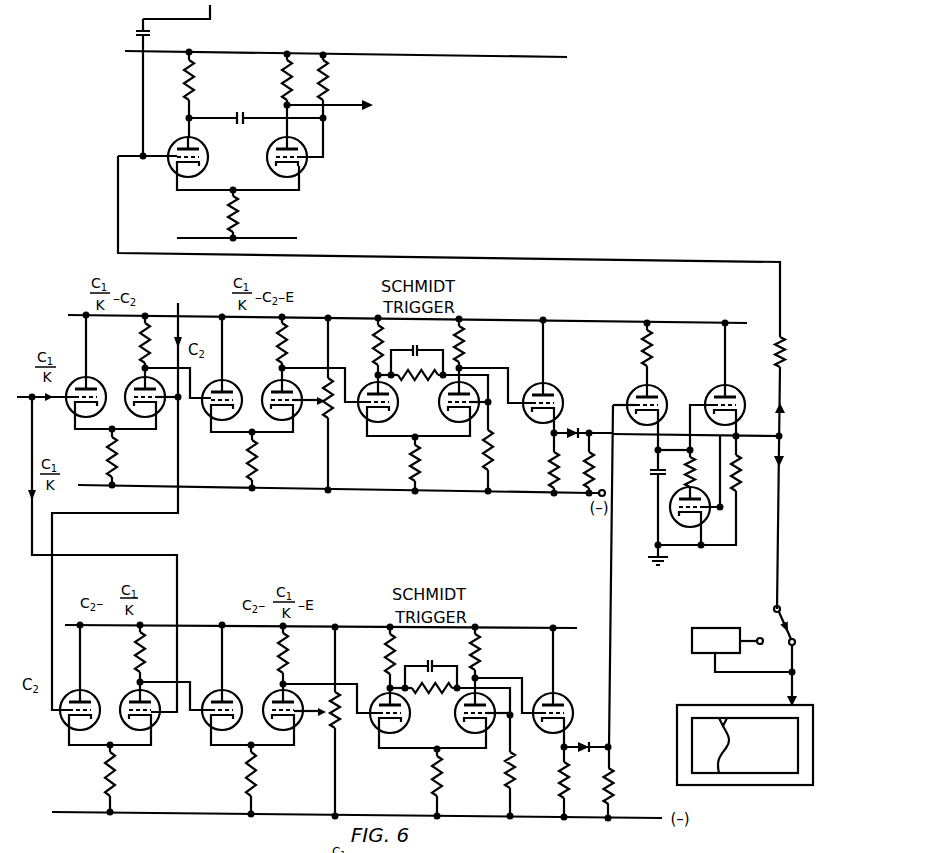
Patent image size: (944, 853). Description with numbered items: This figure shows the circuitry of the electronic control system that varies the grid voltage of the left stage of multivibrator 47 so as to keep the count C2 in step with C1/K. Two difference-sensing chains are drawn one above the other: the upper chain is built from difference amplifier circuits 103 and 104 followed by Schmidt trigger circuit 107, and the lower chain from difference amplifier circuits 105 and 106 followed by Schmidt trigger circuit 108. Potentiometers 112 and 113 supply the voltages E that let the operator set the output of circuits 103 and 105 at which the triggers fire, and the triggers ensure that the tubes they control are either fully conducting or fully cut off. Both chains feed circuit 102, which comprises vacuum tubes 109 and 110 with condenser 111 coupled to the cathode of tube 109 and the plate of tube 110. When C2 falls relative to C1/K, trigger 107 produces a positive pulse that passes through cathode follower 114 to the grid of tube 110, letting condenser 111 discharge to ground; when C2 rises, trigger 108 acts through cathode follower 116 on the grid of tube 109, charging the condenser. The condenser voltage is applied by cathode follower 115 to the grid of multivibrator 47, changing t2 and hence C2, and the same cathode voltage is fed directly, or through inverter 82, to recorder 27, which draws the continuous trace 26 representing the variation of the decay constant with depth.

The multivibrator 47 is at (227, 167).
The circuit 102 is at (684, 443).
The difference amplifier circuit 103 is at (102, 371).
The difference amplifier circuit 104 is at (268, 374).
The difference amplifier circuit 105 is at (125, 686).
The difference amplifier circuit 106 is at (267, 686).
The Schmidt trigger circuit 107 is at (405, 413).
The Schmidt trigger circuit 108 is at (447, 725).
The vacuum tube 109 is at (640, 392).
The vacuum tube 110 is at (690, 488).
The condenser 111 is at (650, 472).
The potentiometer 112 is at (313, 404).
The potentiometer 113 is at (318, 722).
The cathode follower 114 is at (568, 407).
The cathode follower 115 is at (744, 401).
The cathode follower 116 is at (561, 698).
The inverter 82 is at (697, 628).
The recorder 27 is at (745, 736).
The continuous trace 26 is at (734, 746).